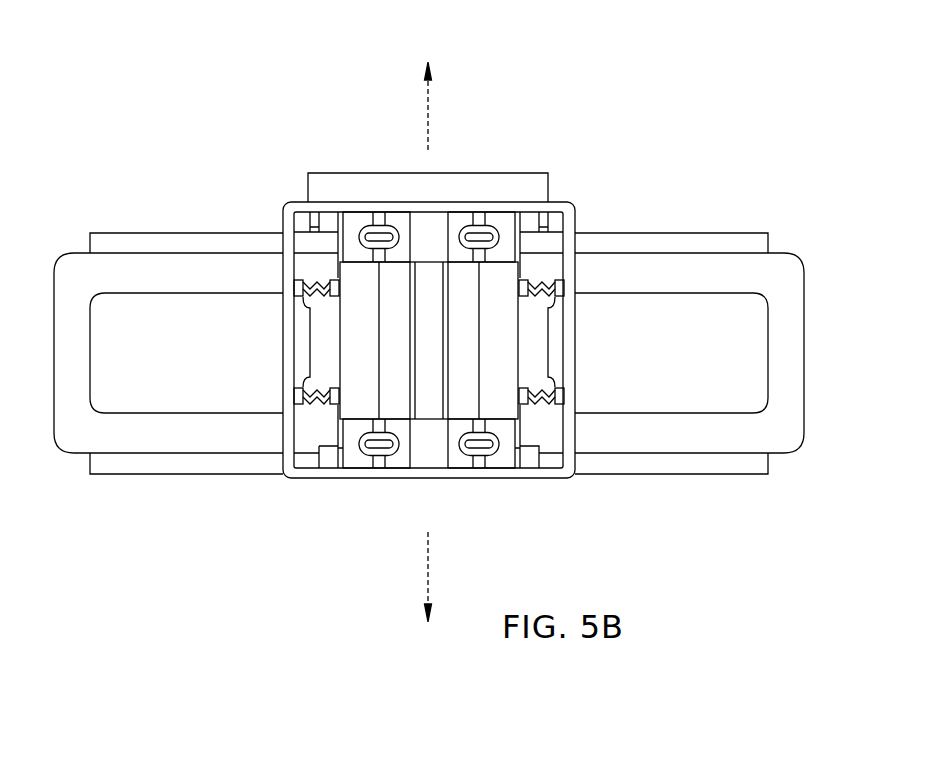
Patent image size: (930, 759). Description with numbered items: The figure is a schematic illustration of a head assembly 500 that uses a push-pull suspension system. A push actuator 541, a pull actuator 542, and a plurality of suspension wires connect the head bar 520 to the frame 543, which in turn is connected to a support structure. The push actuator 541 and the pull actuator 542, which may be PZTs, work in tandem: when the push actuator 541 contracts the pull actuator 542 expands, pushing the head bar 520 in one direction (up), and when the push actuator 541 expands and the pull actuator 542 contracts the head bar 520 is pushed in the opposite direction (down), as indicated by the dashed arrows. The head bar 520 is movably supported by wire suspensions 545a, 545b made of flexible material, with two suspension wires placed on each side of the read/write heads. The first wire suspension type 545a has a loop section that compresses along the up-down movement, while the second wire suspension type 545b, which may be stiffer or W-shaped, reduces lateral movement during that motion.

The head assembly 500 is at (429, 323).
The head bar 520 is at (518, 345).
The push actuator 541 is at (391, 182).
The pull actuator 542 is at (437, 455).
The frame 543 is at (573, 203).
The first wire suspension type 545a is at (372, 222).
The second wire suspension type 545b is at (315, 280).